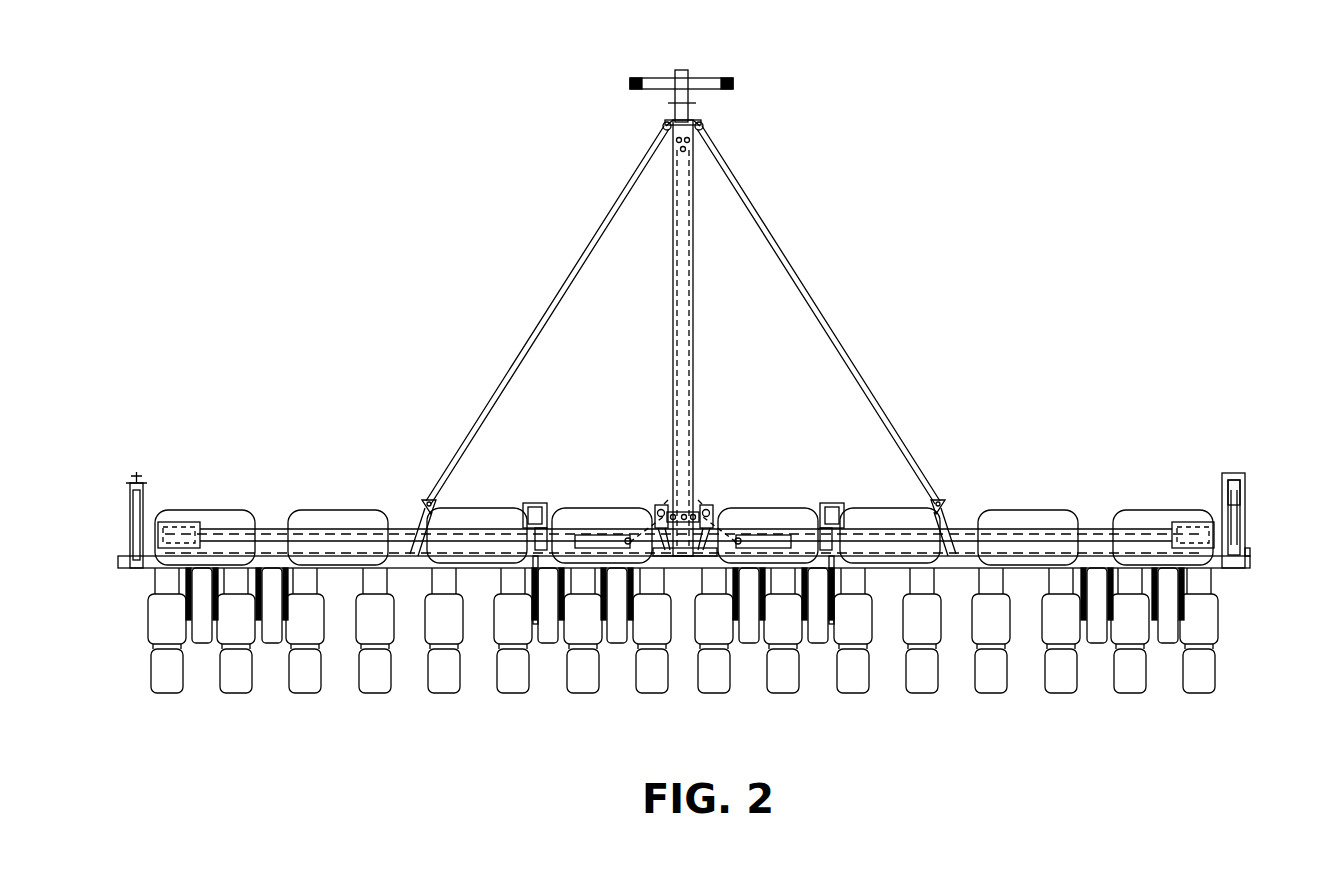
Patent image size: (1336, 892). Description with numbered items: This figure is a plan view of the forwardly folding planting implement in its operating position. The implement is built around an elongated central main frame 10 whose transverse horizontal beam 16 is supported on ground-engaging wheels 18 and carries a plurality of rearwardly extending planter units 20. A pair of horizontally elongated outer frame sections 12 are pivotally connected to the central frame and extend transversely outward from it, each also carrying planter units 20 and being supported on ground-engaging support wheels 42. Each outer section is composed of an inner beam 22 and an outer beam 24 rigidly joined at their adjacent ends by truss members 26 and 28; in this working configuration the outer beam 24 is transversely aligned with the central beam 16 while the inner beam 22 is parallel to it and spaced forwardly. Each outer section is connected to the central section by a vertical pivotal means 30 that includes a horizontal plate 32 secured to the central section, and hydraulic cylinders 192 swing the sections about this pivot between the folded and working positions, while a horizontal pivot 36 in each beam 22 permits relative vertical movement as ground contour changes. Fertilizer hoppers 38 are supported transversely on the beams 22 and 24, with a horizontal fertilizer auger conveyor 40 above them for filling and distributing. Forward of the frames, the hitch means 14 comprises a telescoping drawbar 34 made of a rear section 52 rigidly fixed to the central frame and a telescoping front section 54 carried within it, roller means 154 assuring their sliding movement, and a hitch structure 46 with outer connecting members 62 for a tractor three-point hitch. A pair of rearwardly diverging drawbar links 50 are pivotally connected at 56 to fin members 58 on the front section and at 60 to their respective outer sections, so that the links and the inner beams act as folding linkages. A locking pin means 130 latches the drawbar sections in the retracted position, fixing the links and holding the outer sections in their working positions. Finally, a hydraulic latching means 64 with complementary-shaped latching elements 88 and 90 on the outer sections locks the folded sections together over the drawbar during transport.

The main frame 10 is at (638, 745).
The outer frame section 12 is at (300, 740).
The hitch means 14 is at (775, 130).
The transverse horizontal beam 16 is at (698, 570).
The ground-engaging wheels 18 is at (550, 645).
The planter units 20 is at (230, 697).
The inner portion beam 22 is at (603, 495).
The outer portion beam 24 is at (408, 565).
The truss member 26 is at (413, 560).
The truss member 28 is at (490, 560).
The vertical pivotal means 30 is at (668, 497).
The horizontal plate 32 is at (660, 508).
The telescoping drawbar 34 is at (697, 333).
The horizontal pivot 36 is at (532, 503).
The fertilizer hoppers 38 is at (345, 510).
The fertilizer auger conveyor 40 is at (190, 522).
The support wheels 42 is at (274, 645).
The hitch structure 46 is at (720, 80).
The drawbar links 50 is at (600, 230).
The rear section 52 is at (695, 421).
The telescoping front section 54 is at (683, 375).
The pivotal connection 56 is at (663, 127).
The fin members 58 is at (671, 122).
The rearward pivot 60 is at (427, 503).
The outer connecting members 62 is at (630, 82).
The latching means 64 is at (137, 462).
The latching element 88 is at (128, 486).
The latching element 90 is at (1250, 480).
The locking pin means 130 is at (685, 500).
The roller means 154 is at (700, 138).
The hydraulic cylinders 192 is at (625, 540).